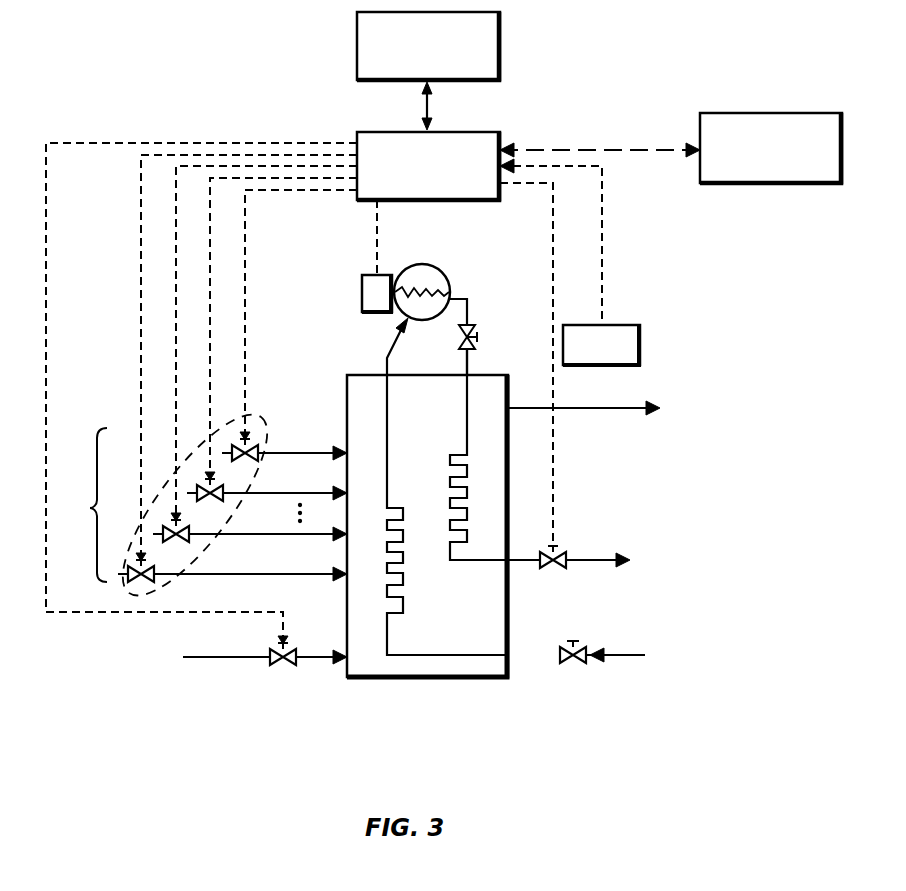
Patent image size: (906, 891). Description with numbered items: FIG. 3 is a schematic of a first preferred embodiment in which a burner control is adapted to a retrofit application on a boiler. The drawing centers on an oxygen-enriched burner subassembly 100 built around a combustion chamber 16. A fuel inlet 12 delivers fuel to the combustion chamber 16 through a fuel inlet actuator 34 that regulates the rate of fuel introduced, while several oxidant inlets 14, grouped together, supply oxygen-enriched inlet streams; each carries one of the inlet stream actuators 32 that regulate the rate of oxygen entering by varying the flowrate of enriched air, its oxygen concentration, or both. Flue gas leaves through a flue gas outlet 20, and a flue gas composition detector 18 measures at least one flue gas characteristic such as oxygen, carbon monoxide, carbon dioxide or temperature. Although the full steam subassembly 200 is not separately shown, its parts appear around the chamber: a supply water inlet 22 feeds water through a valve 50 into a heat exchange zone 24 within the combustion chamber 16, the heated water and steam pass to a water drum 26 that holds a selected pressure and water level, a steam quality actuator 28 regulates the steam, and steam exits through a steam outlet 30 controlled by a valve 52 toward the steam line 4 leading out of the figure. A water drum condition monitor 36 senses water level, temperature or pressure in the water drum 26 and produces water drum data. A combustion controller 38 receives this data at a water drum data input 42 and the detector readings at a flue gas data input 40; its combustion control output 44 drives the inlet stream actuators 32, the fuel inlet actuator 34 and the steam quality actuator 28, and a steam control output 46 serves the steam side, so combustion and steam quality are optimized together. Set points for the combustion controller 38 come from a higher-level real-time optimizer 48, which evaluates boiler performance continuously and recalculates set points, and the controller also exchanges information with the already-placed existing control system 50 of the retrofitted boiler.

The burner subassembly 100 is at (145, 86).
The higher-level optimizer 48 is at (357, 33).
The combustion controller 38 is at (475, 130).
The existing control system 50 is at (797, 183).
The flue gas data input 40 is at (603, 206).
The water drum data input 42 is at (377, 240).
The steam subassembly 200 is at (440, 246).
The water drum 26 is at (442, 270).
The water drum condition monitor 36 is at (362, 295).
The steam quality actuator 28 is at (476, 327).
The steam outlet 30 is at (470, 358).
The flue gas composition detector 18 is at (625, 325).
The combustion control output 44 is at (44, 442).
The oxidant inlets 14 is at (91, 507).
The inlet stream actuators 32 is at (267, 420).
The flue gas outlet 20 is at (623, 408).
The steam control output 46 is at (553, 478).
The valve 52 is at (560, 552).
The discharge outlet 4 is at (596, 562).
The heat exchange zone 24 is at (447, 502).
The fuel inlet 12 is at (203, 660).
The fuel inlet actuator 34 is at (288, 665).
The combustion chamber 16 is at (367, 678).
The supply water inlet 22 is at (625, 656).